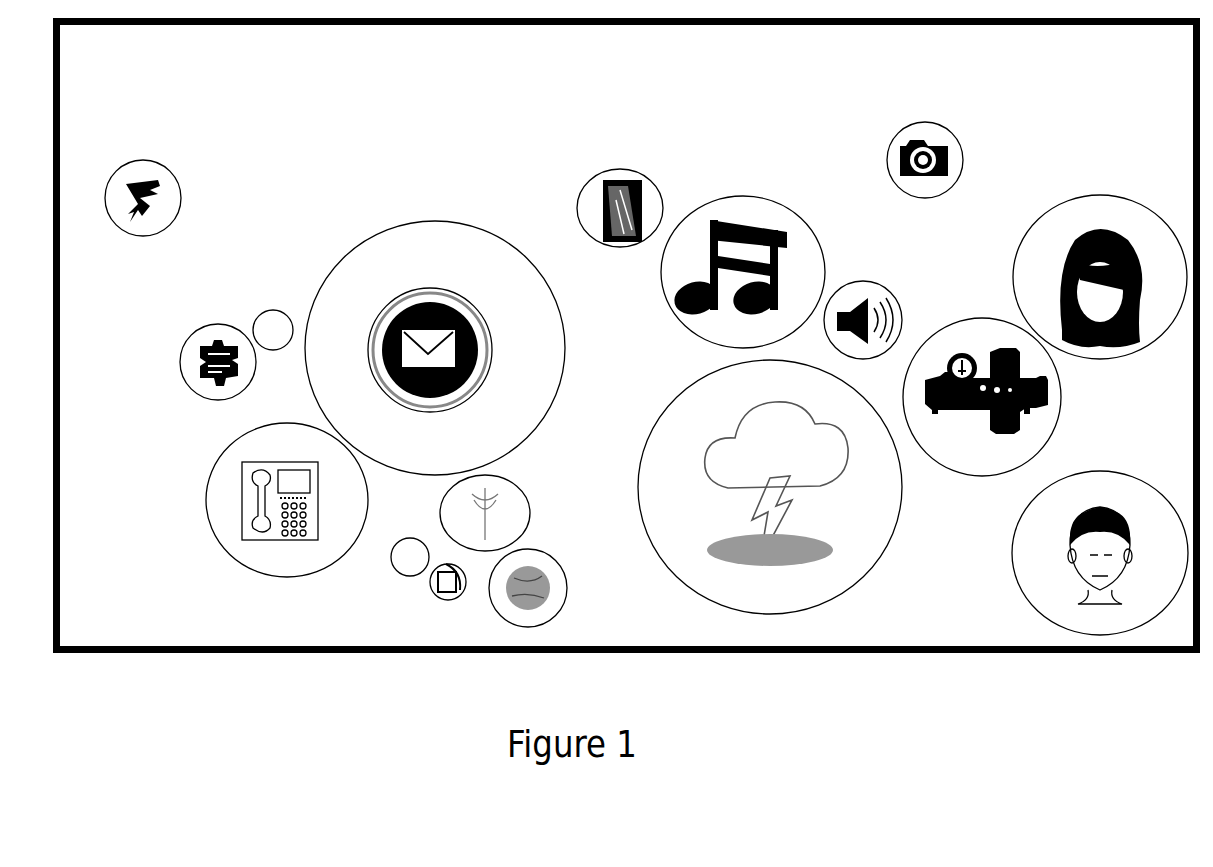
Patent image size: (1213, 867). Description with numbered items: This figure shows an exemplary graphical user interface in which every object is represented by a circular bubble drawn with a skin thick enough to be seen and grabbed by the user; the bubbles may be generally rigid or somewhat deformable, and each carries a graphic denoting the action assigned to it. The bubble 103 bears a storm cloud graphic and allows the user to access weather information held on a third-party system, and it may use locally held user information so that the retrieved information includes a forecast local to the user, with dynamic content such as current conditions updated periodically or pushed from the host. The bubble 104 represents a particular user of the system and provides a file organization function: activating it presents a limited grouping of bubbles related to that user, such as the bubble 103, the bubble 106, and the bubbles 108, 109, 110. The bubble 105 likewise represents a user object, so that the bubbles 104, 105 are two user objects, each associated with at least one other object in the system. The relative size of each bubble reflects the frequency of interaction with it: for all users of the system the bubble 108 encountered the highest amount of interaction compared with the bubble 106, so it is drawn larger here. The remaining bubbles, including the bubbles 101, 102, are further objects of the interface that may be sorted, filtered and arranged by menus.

The camera application icon 101 is at (961, 148).
The music application icon 102 is at (754, 254).
The bubble 103 is at (751, 489).
The bubble 104 is at (1100, 311).
The bubble 105 is at (371, 572).
The bubble 106 is at (185, 192).
The bubble 108 is at (435, 332).
The bubble 109 is at (240, 500).
The bubble 110 is at (892, 304).